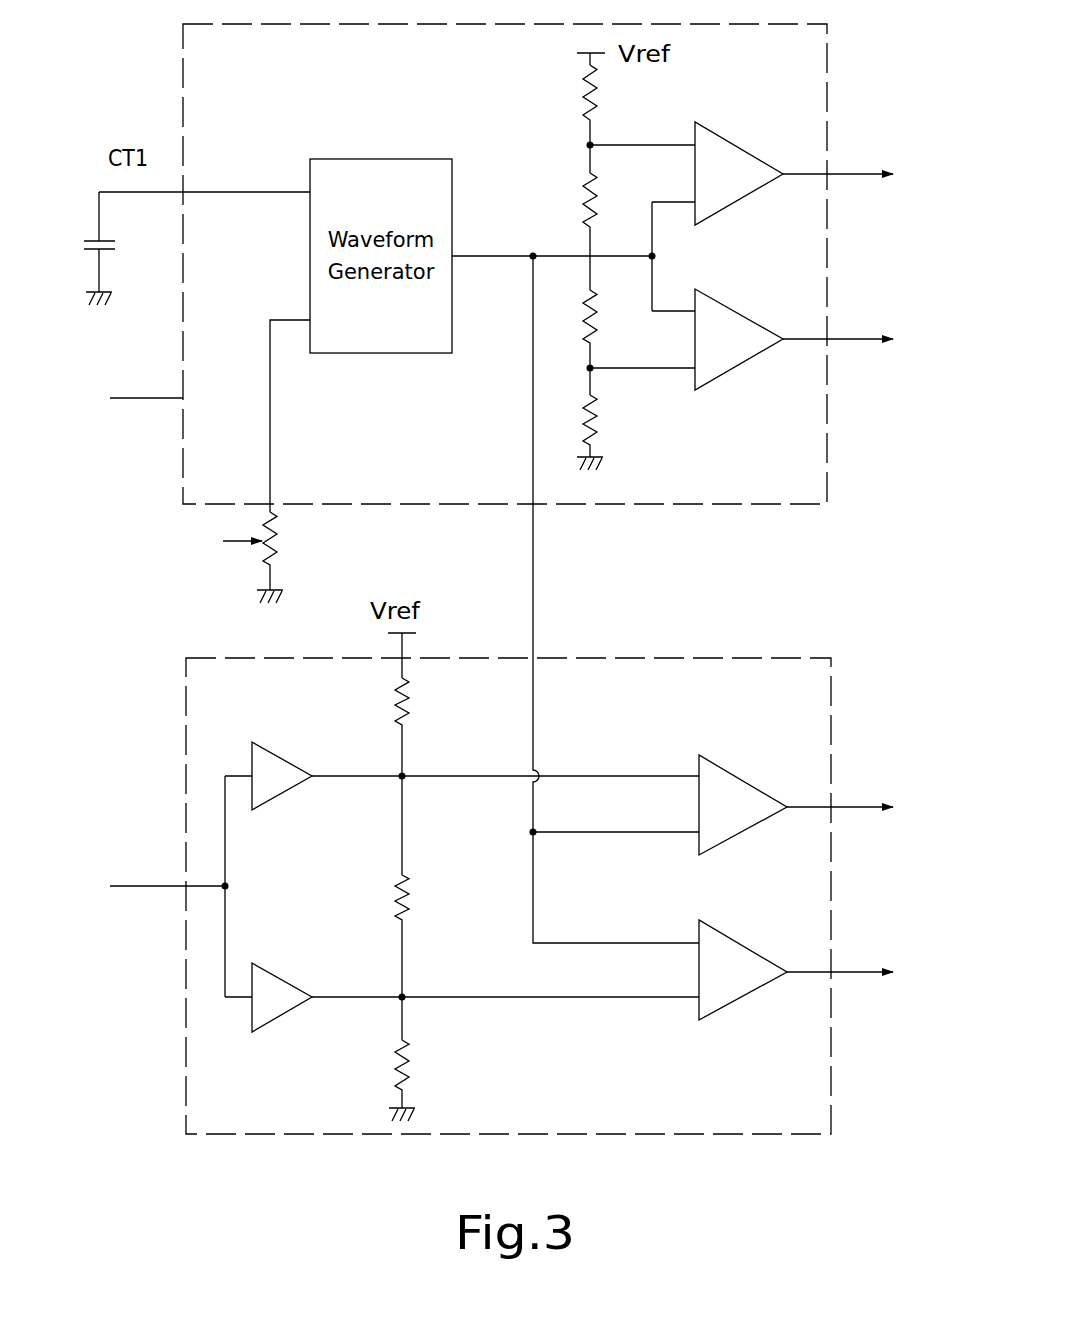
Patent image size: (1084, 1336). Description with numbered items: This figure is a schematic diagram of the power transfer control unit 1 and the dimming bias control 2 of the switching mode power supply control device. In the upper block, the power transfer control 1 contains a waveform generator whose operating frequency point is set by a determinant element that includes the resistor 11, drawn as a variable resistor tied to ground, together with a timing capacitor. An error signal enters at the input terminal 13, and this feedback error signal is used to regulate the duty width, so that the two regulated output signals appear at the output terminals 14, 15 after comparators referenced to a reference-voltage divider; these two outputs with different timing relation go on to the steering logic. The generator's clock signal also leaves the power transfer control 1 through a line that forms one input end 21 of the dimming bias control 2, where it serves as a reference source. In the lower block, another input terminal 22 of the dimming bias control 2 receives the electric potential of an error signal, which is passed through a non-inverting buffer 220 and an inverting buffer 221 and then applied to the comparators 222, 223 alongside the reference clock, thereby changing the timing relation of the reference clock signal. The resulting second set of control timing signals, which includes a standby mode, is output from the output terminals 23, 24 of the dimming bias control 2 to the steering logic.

The power transfer control unit 1 is at (792, 506).
The dimming bias control 2 is at (685, 658).
The resistor 11 is at (258, 552).
The input terminal 13 is at (143, 399).
The output terminal 14 is at (858, 167).
The output terminal 15 is at (862, 340).
The input end 21 is at (532, 587).
The input terminal 22 is at (140, 886).
The output terminal 23 is at (855, 807).
The output terminal 24 is at (862, 975).
The non-inverting buffer 220 is at (250, 760).
The inverting buffer 221 is at (250, 1013).
The comparator 222 is at (740, 775).
The comparator 223 is at (760, 953).